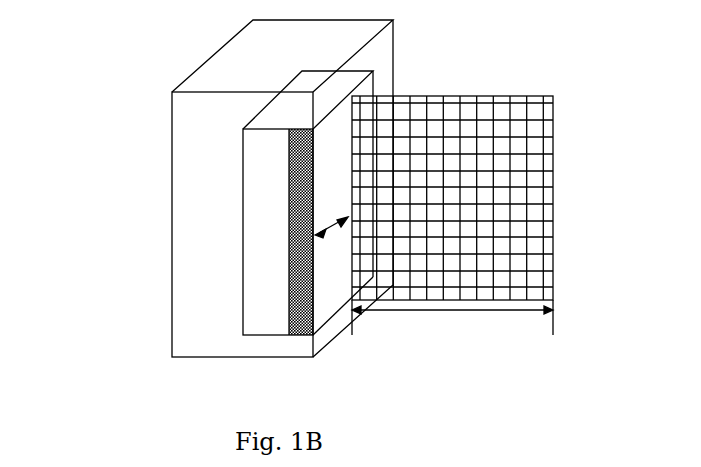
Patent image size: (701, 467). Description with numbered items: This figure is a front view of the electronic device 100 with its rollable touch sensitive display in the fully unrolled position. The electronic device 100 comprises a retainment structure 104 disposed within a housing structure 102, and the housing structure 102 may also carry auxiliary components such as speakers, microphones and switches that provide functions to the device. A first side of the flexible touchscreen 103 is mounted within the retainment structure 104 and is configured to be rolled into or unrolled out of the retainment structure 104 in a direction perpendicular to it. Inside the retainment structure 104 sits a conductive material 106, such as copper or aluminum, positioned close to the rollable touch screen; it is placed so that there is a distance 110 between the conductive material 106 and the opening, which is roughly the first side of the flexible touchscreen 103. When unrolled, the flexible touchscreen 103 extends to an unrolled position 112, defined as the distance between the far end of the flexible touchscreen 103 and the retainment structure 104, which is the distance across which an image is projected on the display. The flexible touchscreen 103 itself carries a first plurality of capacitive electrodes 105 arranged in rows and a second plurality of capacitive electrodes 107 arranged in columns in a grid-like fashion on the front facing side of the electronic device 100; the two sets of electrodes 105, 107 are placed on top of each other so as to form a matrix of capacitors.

The electronic device 100 is at (155, 57).
The housing structure 102 is at (172, 152).
The flexible touchscreen 103 is at (588, 142).
The retainment structure 104 is at (246, 207).
The first plurality of capacitive electrodes 105 is at (553, 250).
The conductive material 106 is at (289, 247).
The second plurality of capacitive electrodes 107 is at (438, 96).
The distance 110 is at (335, 223).
The unrolled position 112 is at (453, 312).